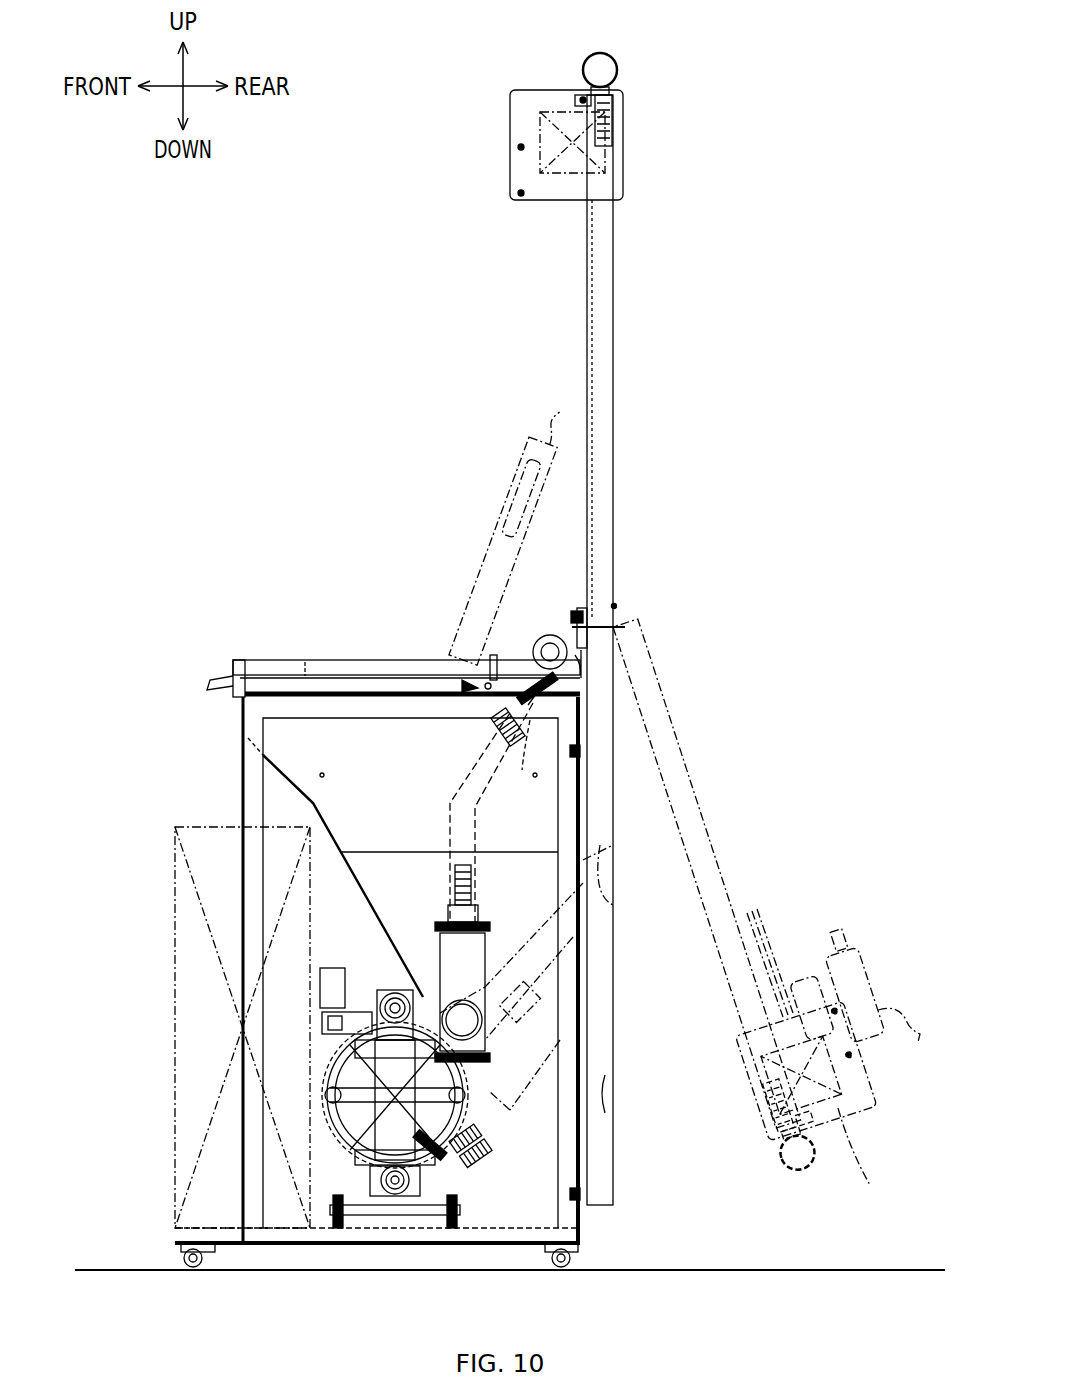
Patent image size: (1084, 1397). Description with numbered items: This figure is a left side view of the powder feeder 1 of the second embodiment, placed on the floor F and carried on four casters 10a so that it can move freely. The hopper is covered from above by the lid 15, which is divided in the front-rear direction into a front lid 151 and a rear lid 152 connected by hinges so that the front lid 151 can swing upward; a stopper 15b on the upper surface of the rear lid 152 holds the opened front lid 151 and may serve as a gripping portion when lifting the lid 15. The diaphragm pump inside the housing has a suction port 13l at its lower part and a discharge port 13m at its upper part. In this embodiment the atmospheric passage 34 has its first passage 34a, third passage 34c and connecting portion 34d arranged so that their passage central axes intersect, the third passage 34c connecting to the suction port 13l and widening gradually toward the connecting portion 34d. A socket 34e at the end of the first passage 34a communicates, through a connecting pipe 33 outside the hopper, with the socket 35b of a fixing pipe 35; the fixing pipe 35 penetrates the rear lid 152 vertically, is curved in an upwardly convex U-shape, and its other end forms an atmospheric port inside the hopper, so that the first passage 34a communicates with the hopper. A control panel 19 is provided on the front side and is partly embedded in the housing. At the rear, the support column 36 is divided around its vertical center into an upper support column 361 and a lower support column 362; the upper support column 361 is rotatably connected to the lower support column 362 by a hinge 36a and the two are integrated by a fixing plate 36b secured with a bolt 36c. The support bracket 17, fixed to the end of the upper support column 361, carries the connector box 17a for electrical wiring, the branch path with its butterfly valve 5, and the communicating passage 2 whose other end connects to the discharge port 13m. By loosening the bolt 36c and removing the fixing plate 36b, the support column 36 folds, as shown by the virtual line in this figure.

The powder feeder 1 is at (215, 530).
The communicating passage 2 is at (565, 175).
The butterfly valve 5 is at (618, 72).
The caster 10a is at (190, 1266).
The suction port 13l is at (437, 1195).
The discharge port 13m is at (395, 998).
The lid 15 is at (280, 665).
The stopper 15b is at (487, 668).
The front lid 151 is at (336, 665).
The rear lid 152 is at (590, 658).
The support bracket 17 is at (510, 122).
The connector box 17a is at (565, 110).
The control panel 19 is at (175, 953).
The connecting pipe 33 is at (455, 800).
The atmospheric passage 34 is at (560, 985).
The first passage 34a is at (555, 952).
The third passage 34c is at (610, 1135).
The connecting portion 34d is at (540, 1020).
The socket 34e is at (455, 905).
The fixing pipe 35 is at (530, 665).
The socket 35b is at (515, 765).
The support column 36 is at (614, 353).
The hinge 36a is at (616, 605).
The fixing plate 36b is at (575, 632).
The bolt 36c is at (570, 615).
The upper support column 361 is at (614, 443).
The lower support column 362 is at (617, 1093).
The floor F is at (105, 1268).